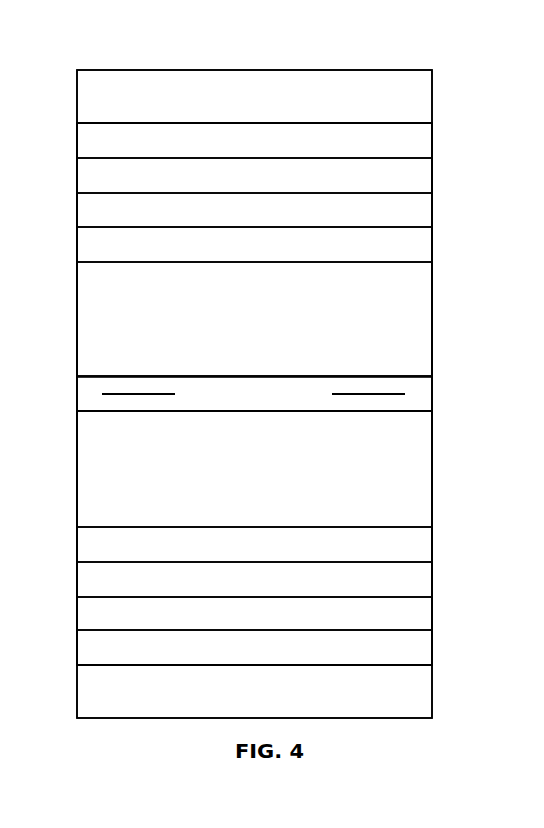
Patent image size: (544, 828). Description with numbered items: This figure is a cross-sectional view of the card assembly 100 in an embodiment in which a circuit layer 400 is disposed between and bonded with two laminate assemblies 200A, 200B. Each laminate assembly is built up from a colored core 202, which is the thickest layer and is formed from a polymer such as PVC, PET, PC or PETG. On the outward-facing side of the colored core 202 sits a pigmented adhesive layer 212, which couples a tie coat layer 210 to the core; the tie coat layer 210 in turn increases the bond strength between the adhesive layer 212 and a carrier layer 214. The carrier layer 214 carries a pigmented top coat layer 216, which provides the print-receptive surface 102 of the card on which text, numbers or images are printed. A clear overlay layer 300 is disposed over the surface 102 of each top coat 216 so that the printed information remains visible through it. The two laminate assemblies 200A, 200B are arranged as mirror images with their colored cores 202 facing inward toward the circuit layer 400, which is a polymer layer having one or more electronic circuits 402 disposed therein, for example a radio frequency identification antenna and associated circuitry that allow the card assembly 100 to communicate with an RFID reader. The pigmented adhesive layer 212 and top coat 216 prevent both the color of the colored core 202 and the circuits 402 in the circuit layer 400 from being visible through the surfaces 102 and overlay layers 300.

The card assembly 100 is at (463, 40).
The surface 102 is at (357, 119).
The laminate assembly 200A is at (439, 123).
The laminate assembly 200B is at (439, 411).
The overlay layer 300 is at (87, 97).
The top coat layer 216 is at (87, 141).
The carrier layer 214 is at (87, 176).
The tie coat layer 210 is at (87, 210).
The adhesive layer 212 is at (87, 244).
The colored core 202 is at (87, 321).
The circuit layer 400 is at (87, 394).
The electronic circuit 402 is at (123, 400).